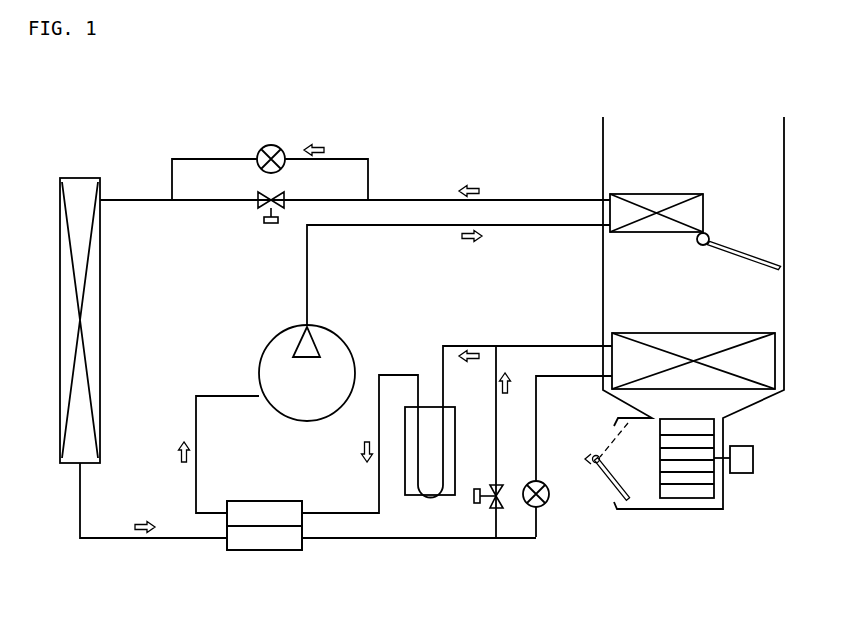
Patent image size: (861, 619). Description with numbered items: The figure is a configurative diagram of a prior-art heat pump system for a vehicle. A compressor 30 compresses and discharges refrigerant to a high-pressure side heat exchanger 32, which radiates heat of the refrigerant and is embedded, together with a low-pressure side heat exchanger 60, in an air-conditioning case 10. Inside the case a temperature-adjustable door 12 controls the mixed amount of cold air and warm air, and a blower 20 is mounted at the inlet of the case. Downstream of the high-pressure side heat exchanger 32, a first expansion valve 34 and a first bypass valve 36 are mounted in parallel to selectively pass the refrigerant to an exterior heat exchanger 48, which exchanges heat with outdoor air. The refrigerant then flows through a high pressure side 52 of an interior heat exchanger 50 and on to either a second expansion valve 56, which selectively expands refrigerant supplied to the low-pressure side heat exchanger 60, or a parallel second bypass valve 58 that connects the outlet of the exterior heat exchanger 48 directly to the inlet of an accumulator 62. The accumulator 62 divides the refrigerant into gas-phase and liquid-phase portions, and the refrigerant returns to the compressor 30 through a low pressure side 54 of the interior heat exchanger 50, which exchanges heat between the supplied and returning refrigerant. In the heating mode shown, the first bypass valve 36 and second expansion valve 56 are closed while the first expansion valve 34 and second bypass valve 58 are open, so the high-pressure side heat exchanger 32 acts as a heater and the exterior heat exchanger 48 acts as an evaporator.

The air-conditioning case 10 is at (784, 145).
The temperature-adjustable door 12 is at (750, 253).
The blower 20 is at (702, 440).
The compressor 30 is at (273, 339).
The high-pressure side heat exchanger 32 is at (655, 194).
The first expansion valve 34 is at (267, 145).
The first bypass valve 36 is at (268, 224).
The exterior heat exchanger 48 is at (80, 178).
The interior heat exchanger 50 is at (270, 531).
The high pressure side 52 is at (257, 545).
The low pressure side 54 is at (257, 508).
The second expansion valve 56 is at (546, 503).
The second bypass valve 58 is at (475, 503).
The low-pressure side heat exchanger 60 is at (758, 360).
The accumulator 62 is at (432, 407).